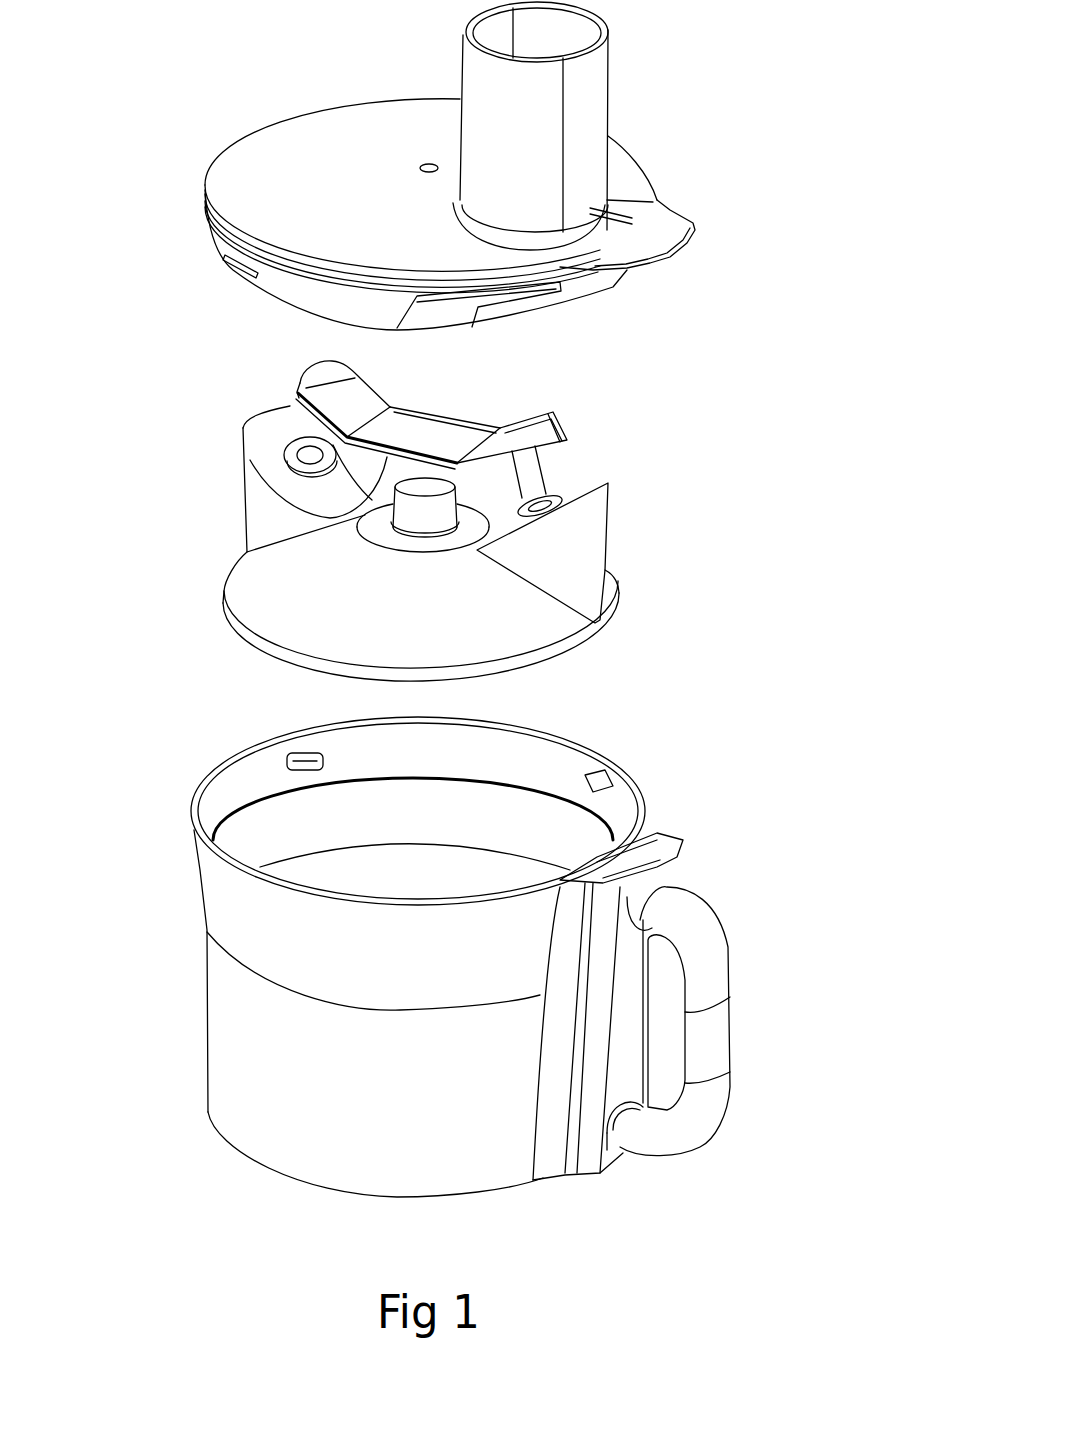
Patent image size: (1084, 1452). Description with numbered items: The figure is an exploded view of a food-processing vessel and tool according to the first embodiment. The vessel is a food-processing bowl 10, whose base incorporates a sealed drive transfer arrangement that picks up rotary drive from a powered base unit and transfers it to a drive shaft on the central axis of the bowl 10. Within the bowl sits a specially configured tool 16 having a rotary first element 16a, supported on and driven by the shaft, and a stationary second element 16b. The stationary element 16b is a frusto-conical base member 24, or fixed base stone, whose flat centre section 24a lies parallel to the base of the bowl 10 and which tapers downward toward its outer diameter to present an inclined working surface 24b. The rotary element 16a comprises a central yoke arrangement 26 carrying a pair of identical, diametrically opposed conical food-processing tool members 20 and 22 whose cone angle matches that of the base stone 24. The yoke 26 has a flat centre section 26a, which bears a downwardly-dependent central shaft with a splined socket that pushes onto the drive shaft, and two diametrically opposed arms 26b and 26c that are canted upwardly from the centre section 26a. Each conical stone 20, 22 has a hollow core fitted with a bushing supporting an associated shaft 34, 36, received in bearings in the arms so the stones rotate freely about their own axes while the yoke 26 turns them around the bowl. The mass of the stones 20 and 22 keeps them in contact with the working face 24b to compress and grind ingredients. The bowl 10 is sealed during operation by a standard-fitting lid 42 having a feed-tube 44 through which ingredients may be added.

The food-processing bowl 10 is at (249, 1055).
The tool 16 is at (438, 541).
The first element 16a is at (523, 427).
The second element 16b is at (394, 551).
The food-processing tool member 20 is at (588, 540).
The food-processing tool member 22 is at (262, 507).
The base member 24 is at (362, 596).
The centre section 24a is at (428, 545).
The inclined working surface 24b is at (278, 573).
The yoke arrangement 26 is at (447, 401).
The centre section 26a is at (423, 427).
The arm 26b is at (520, 427).
The arm 26c is at (343, 388).
The shaft 34 is at (537, 495).
The shaft 36 is at (312, 457).
The lid 42 is at (315, 130).
The feed-tube 44 is at (587, 90).